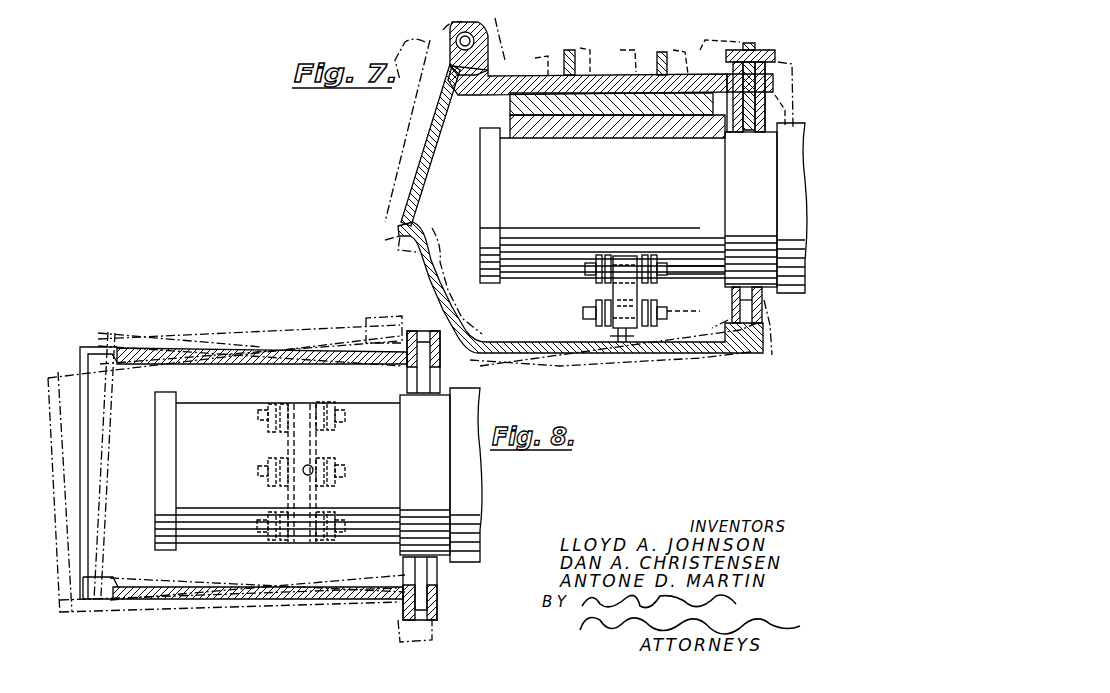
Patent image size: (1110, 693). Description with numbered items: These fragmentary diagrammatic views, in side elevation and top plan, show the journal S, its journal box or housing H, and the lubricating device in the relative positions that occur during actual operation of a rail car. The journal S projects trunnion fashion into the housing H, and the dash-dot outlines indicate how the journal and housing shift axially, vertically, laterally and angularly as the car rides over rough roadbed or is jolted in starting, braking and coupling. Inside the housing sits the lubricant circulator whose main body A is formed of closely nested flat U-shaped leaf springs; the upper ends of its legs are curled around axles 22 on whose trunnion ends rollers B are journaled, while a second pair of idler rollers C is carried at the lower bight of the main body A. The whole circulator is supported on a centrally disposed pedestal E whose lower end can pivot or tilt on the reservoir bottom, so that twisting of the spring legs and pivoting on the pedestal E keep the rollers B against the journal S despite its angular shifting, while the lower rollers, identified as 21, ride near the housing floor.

In FIG. 7, the lower shaft 21 is at (667, 320).
In FIG. 8, the lower shaft 21 is at (268, 472).
In FIG. 7, the axles 22 is at (667, 271).
In FIG. 8, the axles 22 is at (268, 414).
In FIG. 7, the main body A is at (624, 256).
In FIG. 7, the roller B is at (657, 251).
In FIG. 8, the roller B is at (278, 398).
In FIG. 7, the idler rollers C is at (660, 310).
In FIG. 8, the idler rollers C is at (332, 465).
In FIG. 7, the pedestal E is at (620, 346).
In FIG. 8, the pedestal E is at (305, 462).
In FIG. 7, the journal box H is at (413, 281).
In FIG. 8, the journal box H is at (88, 344).
In FIG. 7, the journal S is at (625, 176).
In FIG. 8, the journal S is at (389, 470).